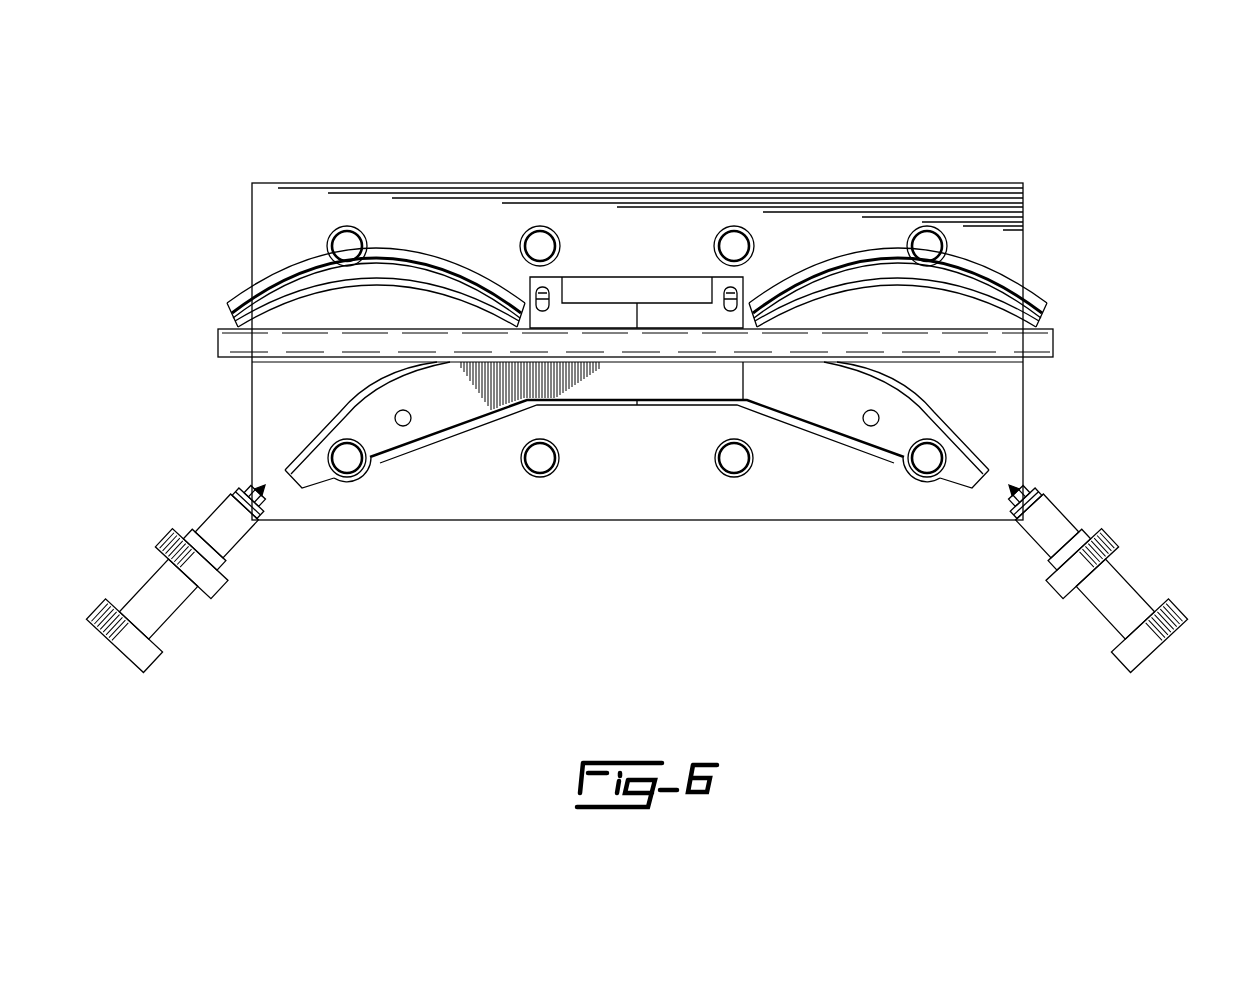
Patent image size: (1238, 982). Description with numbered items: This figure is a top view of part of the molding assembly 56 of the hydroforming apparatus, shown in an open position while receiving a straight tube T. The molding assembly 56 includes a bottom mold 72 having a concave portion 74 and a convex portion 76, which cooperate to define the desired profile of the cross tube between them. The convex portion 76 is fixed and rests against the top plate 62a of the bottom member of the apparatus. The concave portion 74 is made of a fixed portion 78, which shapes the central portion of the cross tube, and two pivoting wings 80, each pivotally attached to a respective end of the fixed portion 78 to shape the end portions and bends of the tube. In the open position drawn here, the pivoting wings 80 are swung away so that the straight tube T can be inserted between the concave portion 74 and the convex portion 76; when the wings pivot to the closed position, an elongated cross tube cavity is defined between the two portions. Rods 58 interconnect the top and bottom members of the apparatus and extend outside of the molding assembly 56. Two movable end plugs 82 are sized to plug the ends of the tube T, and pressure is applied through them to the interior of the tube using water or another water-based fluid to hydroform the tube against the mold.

The molding assembly 56 is at (222, 220).
The top plate 62a is at (298, 198).
The fixed portion 78 is at (604, 277).
The concave portion 74 is at (916, 211).
The pivoting wings 80 is at (970, 272).
The bottom mold 72 is at (692, 212).
The straight tube T is at (1043, 340).
The convex portion 76 is at (992, 447).
The rods 58 is at (541, 459).
The movable end plugs 82 is at (247, 528).